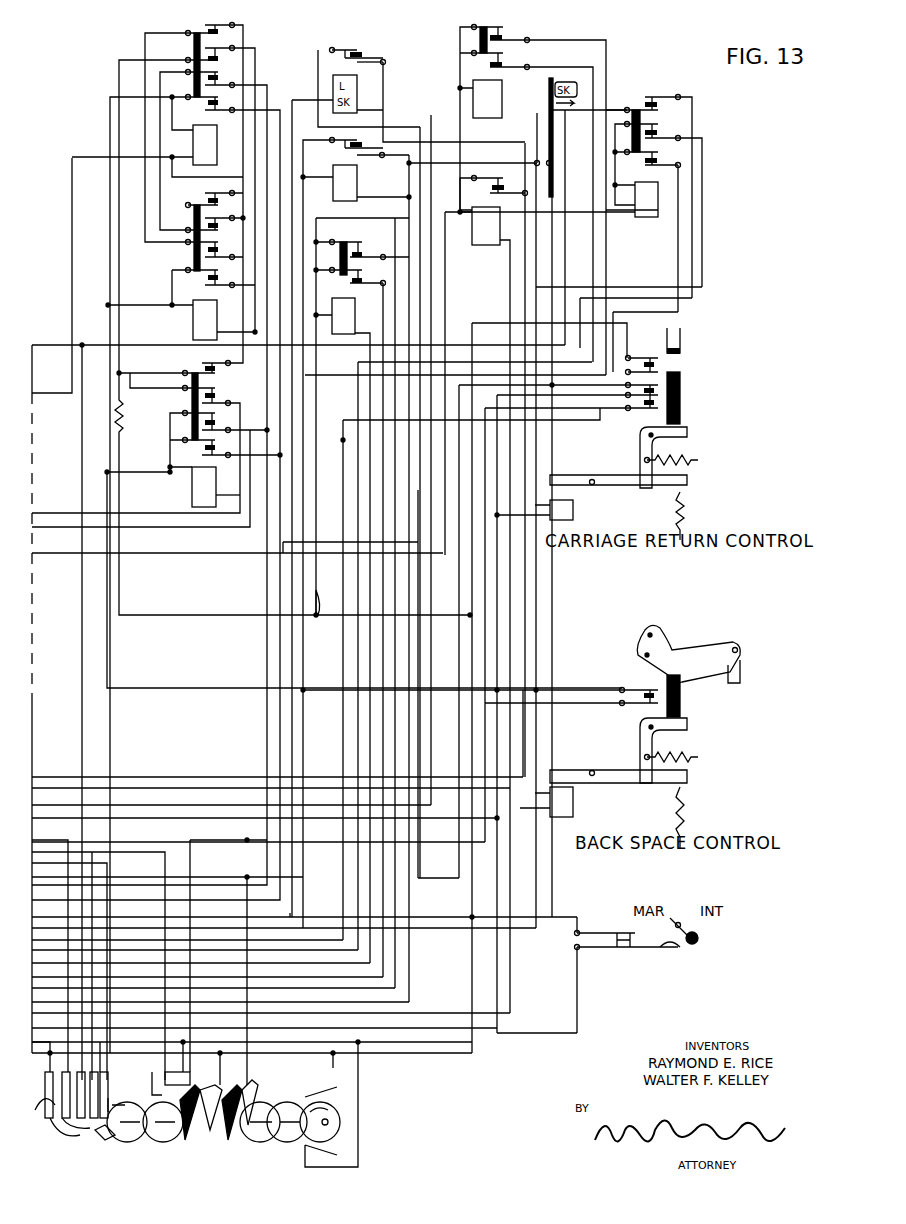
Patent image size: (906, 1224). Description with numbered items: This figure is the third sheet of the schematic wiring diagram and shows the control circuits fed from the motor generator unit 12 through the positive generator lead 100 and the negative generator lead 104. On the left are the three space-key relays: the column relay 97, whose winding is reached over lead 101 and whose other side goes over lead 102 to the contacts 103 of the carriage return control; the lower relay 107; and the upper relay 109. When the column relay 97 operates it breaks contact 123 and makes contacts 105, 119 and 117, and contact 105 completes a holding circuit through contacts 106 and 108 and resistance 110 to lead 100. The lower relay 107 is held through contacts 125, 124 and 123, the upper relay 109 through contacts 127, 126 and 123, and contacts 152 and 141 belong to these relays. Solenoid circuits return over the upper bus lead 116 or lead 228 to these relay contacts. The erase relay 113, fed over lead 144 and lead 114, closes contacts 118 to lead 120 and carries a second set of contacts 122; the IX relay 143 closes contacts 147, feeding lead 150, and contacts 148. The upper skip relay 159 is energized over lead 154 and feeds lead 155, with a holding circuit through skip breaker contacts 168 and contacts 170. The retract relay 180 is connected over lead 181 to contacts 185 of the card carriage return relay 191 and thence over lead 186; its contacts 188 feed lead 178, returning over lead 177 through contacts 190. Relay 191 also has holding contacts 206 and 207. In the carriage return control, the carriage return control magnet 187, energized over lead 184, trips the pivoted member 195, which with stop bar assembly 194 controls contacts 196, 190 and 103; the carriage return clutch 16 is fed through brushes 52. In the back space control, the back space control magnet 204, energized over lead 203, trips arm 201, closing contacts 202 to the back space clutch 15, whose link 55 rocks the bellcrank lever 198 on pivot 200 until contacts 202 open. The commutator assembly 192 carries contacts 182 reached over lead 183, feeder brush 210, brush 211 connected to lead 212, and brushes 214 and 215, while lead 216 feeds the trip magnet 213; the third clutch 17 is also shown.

The contact 124 is at (207, 26).
The contacts of the upper relay 108 is at (222, 52).
The contacts 127 is at (222, 80).
The contacts of the upper relay 141 is at (208, 103).
The upper relay 109 is at (193, 153).
The contacts of the lower relay 106 is at (208, 196).
The contacts 126 is at (222, 227).
The contacts 125 is at (222, 247).
The contacts of the lower relay 152 is at (210, 280).
The lower relay 107 is at (193, 326).
The lead 102 is at (108, 273).
The contact 123 is at (203, 366).
The contact 105 is at (214, 397).
The contact 119 is at (208, 402).
The resistance 110 is at (122, 422).
The contacts of the column relay 117 is at (210, 451).
The column relay 97 is at (216, 495).
The lead 101 is at (152, 513).
The positive generator lead 100 is at (119, 472).
The lead 114 is at (431, 115).
The armature contacts of the retract relay 188 is at (350, 147).
The retract relay 180 is at (357, 180).
The lead 178 is at (398, 202).
The contacts of the IX relay 147 is at (365, 247).
The contacts of the IX relay 148 is at (356, 282).
The IX relay 143 is at (355, 318).
The contacts of the erase relay 118 is at (505, 34).
The relay contact 122 is at (505, 63).
The lead 120 is at (606, 61).
The erase relay 113 is at (497, 110).
The skip breaker contacts 168 is at (537, 125).
The contacts 170 is at (506, 180).
The upper skip relay 159 is at (472, 242).
The lead 154 is at (447, 281).
The lead 155 is at (510, 310).
The lead 186 is at (457, 345).
The contacts 185 is at (645, 101).
The contact 207 is at (660, 127).
The lead 181 is at (693, 107).
The contact 206 is at (658, 159).
The card carriage return relay 191 is at (660, 211).
The stop bar assembly 194 is at (680, 340).
The contacts 196 is at (660, 367).
The contacts 190 is at (645, 395).
The pivoted member 195 is at (670, 437).
The contacts 103 is at (632, 431).
The negative generator lead 104 is at (585, 398).
The carriage return control magnet 187 is at (573, 517).
The bellcrank lever 198 is at (668, 652).
The pivot 200 is at (645, 645).
The back-space link 55 is at (742, 671).
The contacts 202 is at (638, 690).
The arm 201 is at (690, 715).
The back space control magnet 204 is at (573, 807).
The lead 212 is at (68, 840).
The lead 183 is at (115, 862).
The lead 216 is at (158, 852).
The brush 214 is at (70, 1050).
The brush 215 is at (96, 1050).
The lead 144 is at (314, 599).
The lead 228 is at (267, 671).
The upper bus lead 116 is at (283, 669).
The lead 203 is at (198, 789).
The lead 150 is at (408, 842).
The lead 177 is at (420, 878).
The lead 184 is at (536, 877).
The feeder brush 210 is at (48, 1115).
The brush 211 is at (70, 1138).
The commutator assembly 192 is at (120, 1132).
The contacts 182 is at (112, 1100).
The third clutch 17 is at (165, 1140).
The trip magnet 213 is at (165, 1073).
The back space clutch 15 is at (190, 1138).
The carriage return clutch 16 is at (230, 1138).
The brushes 52 is at (232, 1093).
The motor generator unit 12 is at (312, 1134).